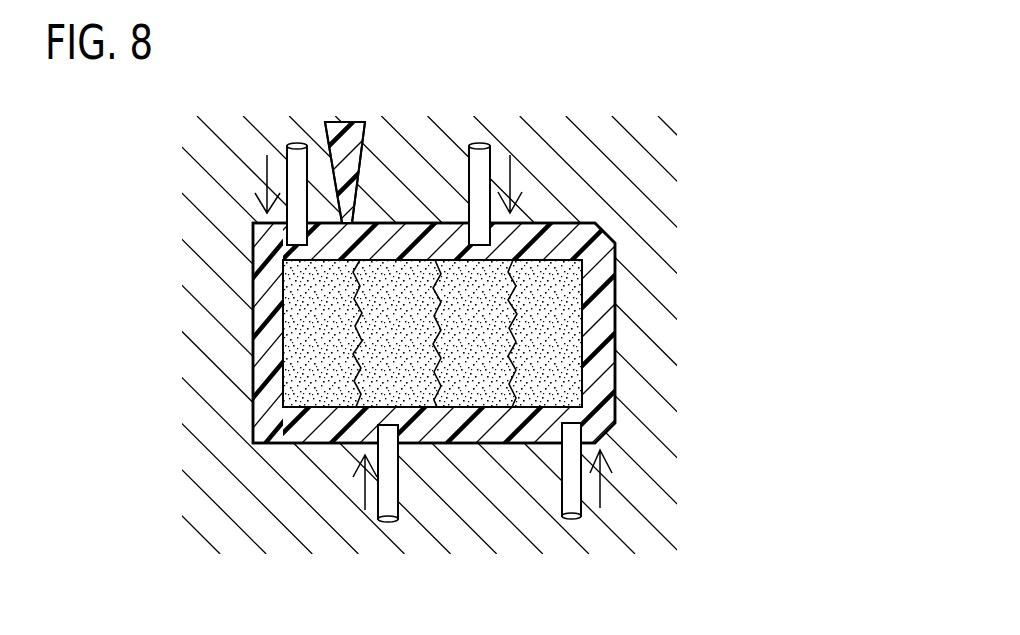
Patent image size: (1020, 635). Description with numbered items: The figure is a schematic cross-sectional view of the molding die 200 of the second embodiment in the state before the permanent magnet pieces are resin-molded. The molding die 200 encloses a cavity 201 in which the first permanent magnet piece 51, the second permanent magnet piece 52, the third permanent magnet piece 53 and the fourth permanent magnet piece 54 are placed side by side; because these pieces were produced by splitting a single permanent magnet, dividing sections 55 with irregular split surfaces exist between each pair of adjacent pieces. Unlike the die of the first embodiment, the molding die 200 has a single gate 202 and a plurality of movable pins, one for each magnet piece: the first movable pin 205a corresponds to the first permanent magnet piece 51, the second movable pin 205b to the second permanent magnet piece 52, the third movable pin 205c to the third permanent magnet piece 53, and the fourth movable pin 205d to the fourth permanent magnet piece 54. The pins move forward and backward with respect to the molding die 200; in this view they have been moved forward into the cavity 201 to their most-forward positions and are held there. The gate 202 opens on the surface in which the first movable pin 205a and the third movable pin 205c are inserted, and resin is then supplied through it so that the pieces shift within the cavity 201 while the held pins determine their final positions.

The molding die 200 is at (700, 481).
The cavity 201 is at (603, 297).
The gate 202 is at (357, 132).
The first movable pin 205a is at (296, 150).
The second movable pin 205b is at (389, 522).
The third movable pin 205c is at (480, 152).
The fourth movable pin 205d is at (571, 519).
The first permanent magnet piece 51 is at (336, 341).
The second permanent magnet piece 52 is at (412, 341).
The third permanent magnet piece 53 is at (487, 341).
The fourth permanent magnet piece 54 is at (564, 341).
The dividing section 55 is at (358, 407).